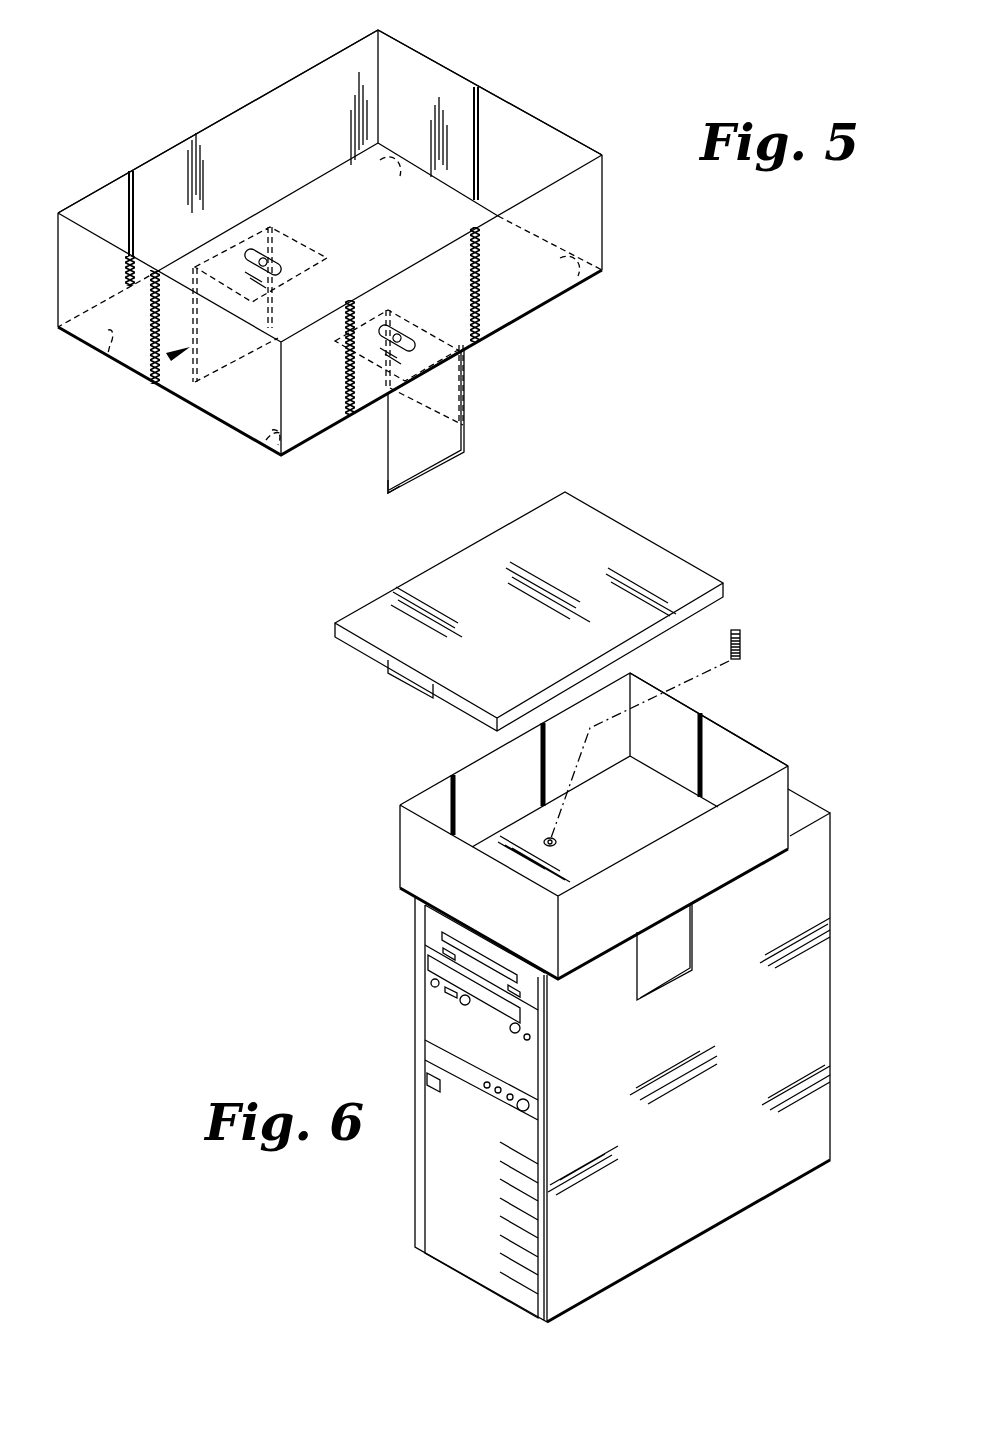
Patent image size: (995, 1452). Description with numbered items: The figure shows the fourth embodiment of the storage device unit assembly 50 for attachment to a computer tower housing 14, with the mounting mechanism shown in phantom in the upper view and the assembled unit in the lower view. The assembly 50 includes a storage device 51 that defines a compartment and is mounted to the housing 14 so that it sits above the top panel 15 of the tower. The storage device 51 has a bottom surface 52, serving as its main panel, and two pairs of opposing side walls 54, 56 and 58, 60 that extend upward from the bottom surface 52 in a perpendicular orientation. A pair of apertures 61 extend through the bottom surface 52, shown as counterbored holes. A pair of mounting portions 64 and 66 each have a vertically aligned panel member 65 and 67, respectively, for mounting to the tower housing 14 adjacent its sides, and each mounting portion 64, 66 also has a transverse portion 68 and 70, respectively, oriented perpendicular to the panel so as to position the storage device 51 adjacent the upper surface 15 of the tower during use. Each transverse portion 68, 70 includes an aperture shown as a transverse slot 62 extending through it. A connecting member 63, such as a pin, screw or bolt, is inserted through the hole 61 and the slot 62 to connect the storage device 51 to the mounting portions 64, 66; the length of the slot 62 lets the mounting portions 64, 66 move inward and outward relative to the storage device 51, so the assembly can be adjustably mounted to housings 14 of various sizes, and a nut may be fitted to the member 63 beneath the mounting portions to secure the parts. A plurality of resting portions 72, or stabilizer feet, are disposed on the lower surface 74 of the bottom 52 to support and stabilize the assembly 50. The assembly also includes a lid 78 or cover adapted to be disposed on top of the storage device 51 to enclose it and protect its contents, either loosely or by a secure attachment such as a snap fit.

In FIG. 6, the computer tower housing 14 is at (833, 975).
In FIG. 6, the top panel 15 is at (805, 813).
In FIG. 5, the storage device unit assembly 50 is at (518, 70).
In FIG. 5, the storage device 51 is at (543, 120).
In FIG. 6, the storage device 51 is at (682, 700).
In FIG. 5, the bottom surface 52 is at (350, 185).
In FIG. 5, the side wall 54 is at (232, 115).
In FIG. 5, the side wall 56 is at (562, 185).
In FIG. 5, the side wall 58 is at (240, 425).
In FIG. 5, the side wall 60 is at (572, 140).
In FIG. 5, the aperture 61 is at (395, 310).
In FIG. 6, the aperture 61 is at (558, 842).
In FIG. 5, the slot 62 is at (276, 226).
In FIG. 6, the connecting member 63 is at (743, 645).
In FIG. 5, the mounting portion 64 is at (148, 382).
In FIG. 5, the panel member 65 is at (192, 378).
In FIG. 5, the mounting portion 66 is at (478, 397).
In FIG. 5, the panel member 67 is at (392, 493).
In FIG. 5, the transverse portion 68 is at (300, 258).
In FIG. 5, the transverse portion 70 is at (283, 432).
In FIG. 5, the resting portion 72 is at (108, 352).
In FIG. 5, the lower surface 74 is at (527, 322).
In FIG. 6, the lid 78 is at (722, 572).